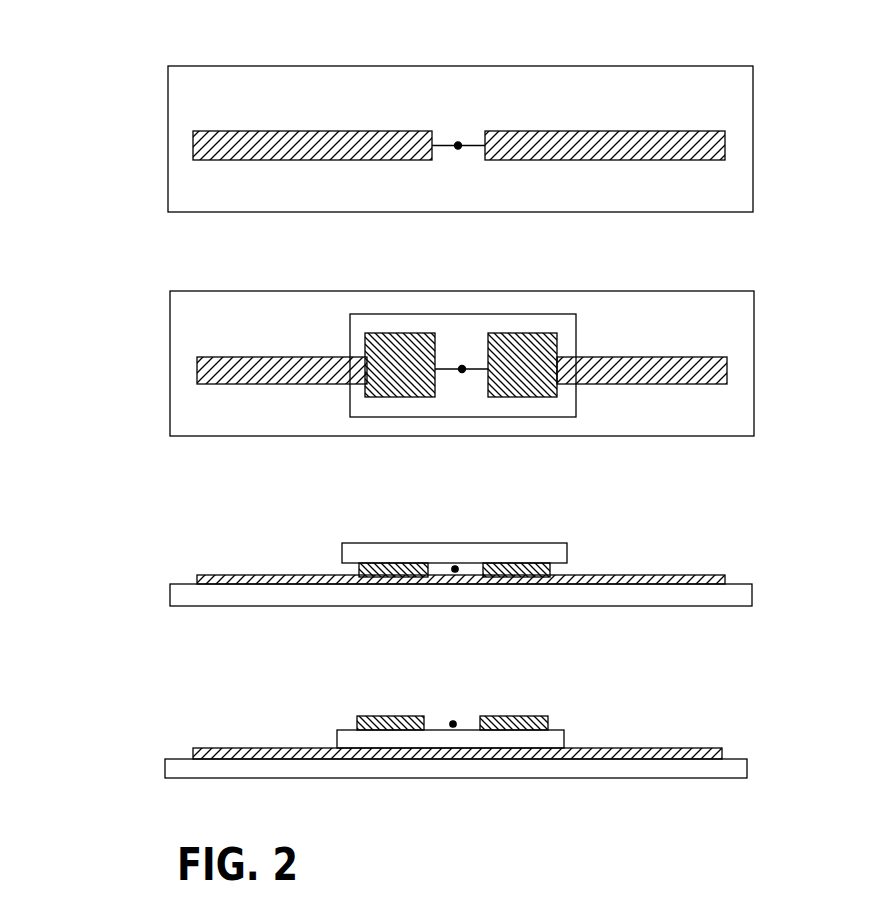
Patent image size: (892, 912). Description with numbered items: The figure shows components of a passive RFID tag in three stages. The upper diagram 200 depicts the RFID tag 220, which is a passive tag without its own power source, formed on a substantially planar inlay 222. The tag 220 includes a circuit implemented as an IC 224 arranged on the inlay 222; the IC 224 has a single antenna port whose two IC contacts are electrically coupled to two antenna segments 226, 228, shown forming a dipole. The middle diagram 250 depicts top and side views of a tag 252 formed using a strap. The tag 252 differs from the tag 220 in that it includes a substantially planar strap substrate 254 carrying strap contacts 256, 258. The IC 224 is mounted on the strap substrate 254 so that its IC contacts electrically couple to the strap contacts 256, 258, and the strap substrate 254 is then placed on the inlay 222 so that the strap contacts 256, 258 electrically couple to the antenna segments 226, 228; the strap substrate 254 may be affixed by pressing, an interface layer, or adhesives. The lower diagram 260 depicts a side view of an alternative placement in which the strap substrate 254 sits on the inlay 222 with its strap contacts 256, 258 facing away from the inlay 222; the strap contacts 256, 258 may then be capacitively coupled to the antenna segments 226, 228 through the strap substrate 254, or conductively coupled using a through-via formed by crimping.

The electrode layer stage 200 is at (73, 55).
The RFID tag 220 is at (166, 132).
The inlay 222 is at (738, 106).
The IC 224 is at (457, 141).
The antenna segment 226 is at (340, 131).
The antenna segment 228 is at (592, 131).
The diagram 250 is at (64, 303).
The tag 252 is at (170, 436).
The strap substrate 254 is at (360, 407).
The strap contact 256 is at (403, 397).
The strap contact 258 is at (535, 397).
The diagram 260 is at (64, 739).